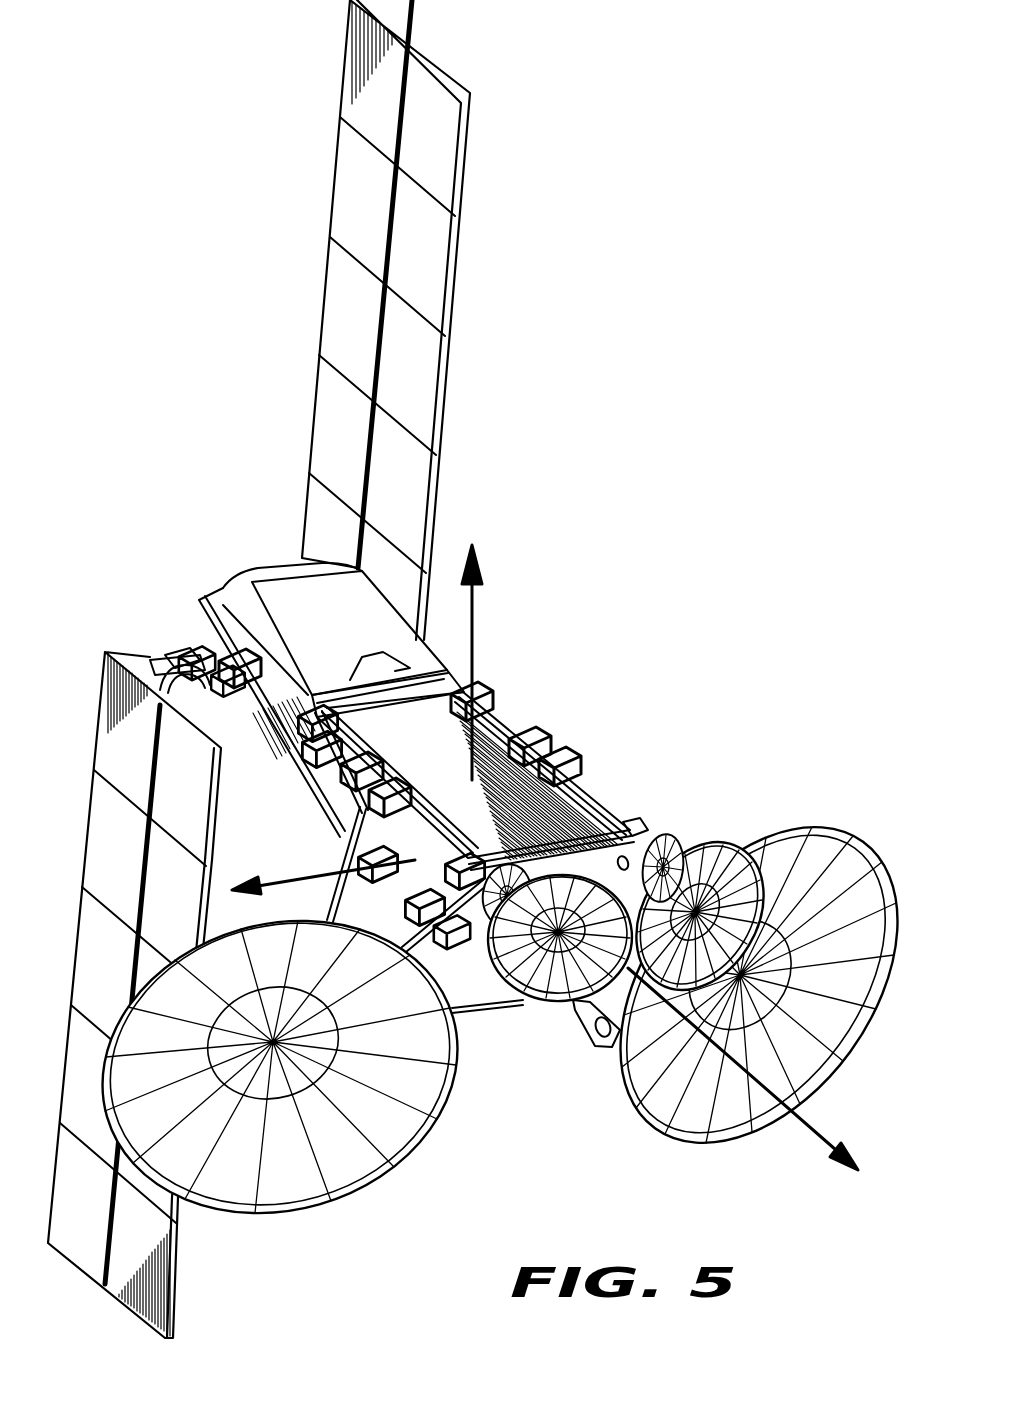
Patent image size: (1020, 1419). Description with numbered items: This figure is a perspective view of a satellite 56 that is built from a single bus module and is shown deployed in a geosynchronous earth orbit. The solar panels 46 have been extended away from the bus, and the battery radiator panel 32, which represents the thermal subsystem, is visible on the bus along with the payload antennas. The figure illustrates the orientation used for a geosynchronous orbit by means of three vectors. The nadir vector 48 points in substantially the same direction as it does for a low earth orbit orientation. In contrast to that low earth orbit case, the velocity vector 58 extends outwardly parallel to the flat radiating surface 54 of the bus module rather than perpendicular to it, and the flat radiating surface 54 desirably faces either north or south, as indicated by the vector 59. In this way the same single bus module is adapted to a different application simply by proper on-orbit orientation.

The battery radiator panel 32 is at (345, 629).
The solar panels 46 is at (451, 368).
The nadir vector 48 is at (813, 1128).
The flat radiating surface 54 is at (208, 588).
The satellite 56 is at (651, 1245).
The velocity vector 58 is at (317, 871).
The north/south direction vector 59 is at (478, 630).